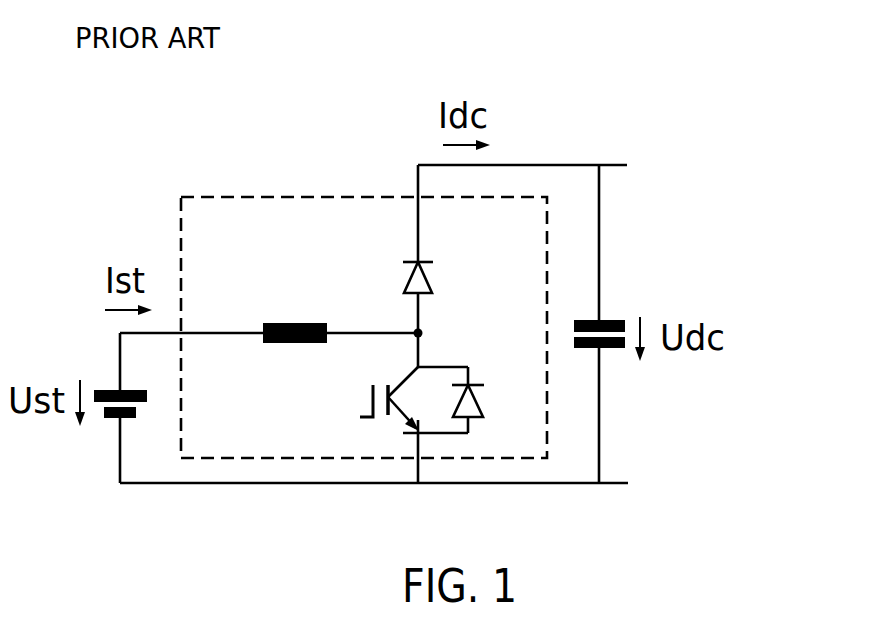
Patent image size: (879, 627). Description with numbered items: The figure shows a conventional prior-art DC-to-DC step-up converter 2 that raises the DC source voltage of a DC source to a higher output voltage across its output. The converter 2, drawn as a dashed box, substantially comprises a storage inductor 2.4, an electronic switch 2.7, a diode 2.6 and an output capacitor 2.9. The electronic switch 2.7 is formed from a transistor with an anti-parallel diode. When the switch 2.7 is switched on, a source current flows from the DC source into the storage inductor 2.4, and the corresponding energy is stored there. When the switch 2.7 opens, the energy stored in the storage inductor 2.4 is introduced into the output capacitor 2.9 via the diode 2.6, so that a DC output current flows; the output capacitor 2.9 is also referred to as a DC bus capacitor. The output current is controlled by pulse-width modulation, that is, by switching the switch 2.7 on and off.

The step-up converter 2 is at (338, 301).
The storage inductor 2.4 is at (274, 301).
The diode 2.6 is at (427, 283).
The electronic switch 2.7 is at (446, 365).
The output capacitor 2.9 is at (638, 296).